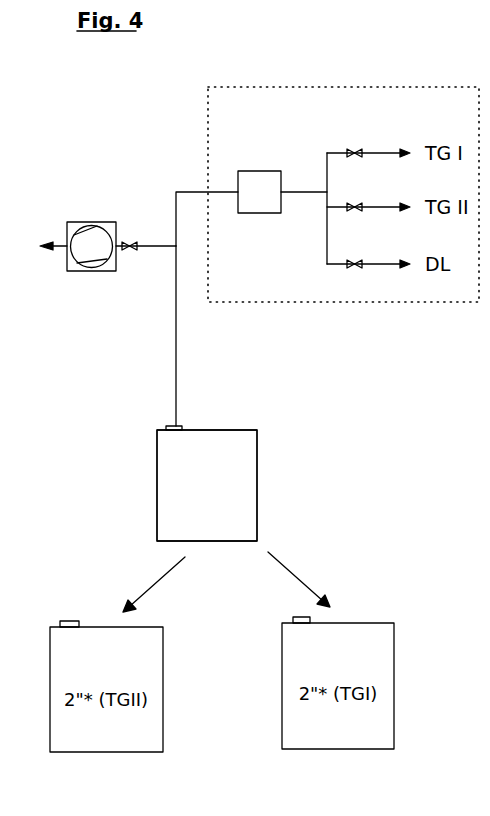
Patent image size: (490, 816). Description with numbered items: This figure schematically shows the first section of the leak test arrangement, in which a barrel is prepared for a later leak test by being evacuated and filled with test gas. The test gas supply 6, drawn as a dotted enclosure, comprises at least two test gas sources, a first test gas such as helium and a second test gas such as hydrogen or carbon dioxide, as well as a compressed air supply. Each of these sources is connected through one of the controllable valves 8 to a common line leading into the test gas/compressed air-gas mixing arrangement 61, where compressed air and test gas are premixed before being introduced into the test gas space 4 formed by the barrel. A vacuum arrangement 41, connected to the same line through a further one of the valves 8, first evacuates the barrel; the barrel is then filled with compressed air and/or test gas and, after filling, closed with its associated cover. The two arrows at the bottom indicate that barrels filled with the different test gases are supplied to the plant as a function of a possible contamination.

The vacuum arrangement 41 is at (97, 222).
The controllable valve 8 is at (129, 233).
The test gas/compressed air-gas mixing arrangement 61 is at (261, 170).
The test gas supply 6 is at (425, 88).
The test gas space 4 is at (222, 473).